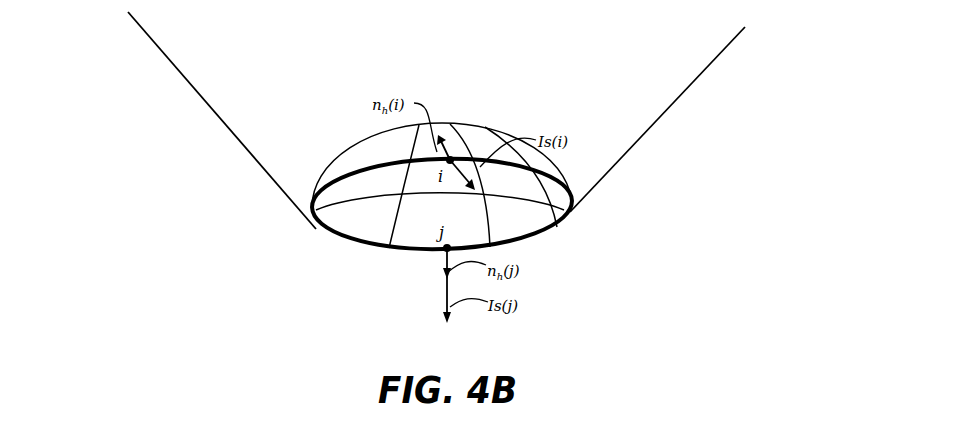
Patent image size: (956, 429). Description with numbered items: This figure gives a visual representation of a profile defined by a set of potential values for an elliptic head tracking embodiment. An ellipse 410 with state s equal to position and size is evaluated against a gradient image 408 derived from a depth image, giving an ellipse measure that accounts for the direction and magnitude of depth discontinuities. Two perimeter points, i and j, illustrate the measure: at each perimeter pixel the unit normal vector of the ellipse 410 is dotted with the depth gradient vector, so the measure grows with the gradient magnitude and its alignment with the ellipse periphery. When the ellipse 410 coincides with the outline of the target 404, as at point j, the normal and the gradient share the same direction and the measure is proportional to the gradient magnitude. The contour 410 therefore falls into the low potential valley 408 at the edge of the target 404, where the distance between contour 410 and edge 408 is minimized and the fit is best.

The target 404 is at (484, 129).
The ellipse 410 is at (372, 162).
The gradient image 408 is at (318, 230).